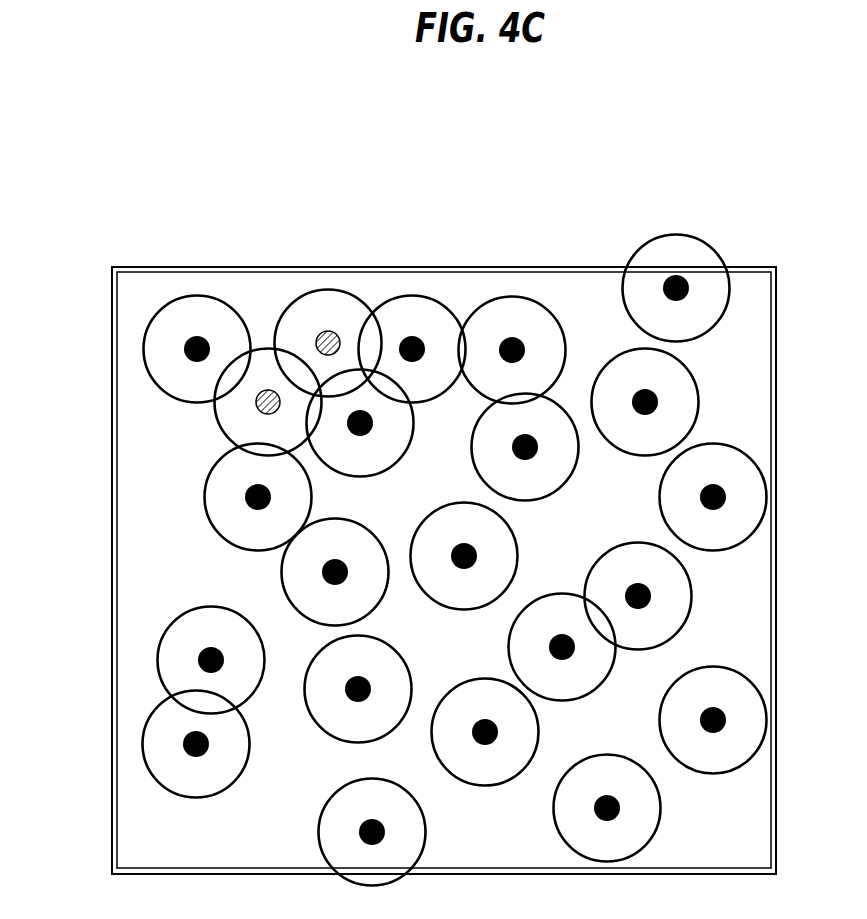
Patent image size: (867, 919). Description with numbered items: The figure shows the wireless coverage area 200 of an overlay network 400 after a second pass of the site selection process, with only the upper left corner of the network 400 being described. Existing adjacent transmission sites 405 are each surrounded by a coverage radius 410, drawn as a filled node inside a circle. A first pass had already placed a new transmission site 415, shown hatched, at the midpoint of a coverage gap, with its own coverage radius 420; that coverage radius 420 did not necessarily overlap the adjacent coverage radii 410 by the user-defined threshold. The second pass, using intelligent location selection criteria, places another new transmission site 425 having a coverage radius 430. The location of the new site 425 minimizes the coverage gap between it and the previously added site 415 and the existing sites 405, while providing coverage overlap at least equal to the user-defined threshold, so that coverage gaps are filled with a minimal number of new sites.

The network 400 is at (114, 82).
The wireless coverage area 200 is at (763, 296).
The existing transmission site 405 is at (408, 451).
The coverage radius 410 is at (452, 405).
The new transmission site 415 is at (316, 341).
The coverage radius 420 is at (320, 292).
The new transmission site 425 is at (269, 413).
The coverage radius 430 is at (213, 413).